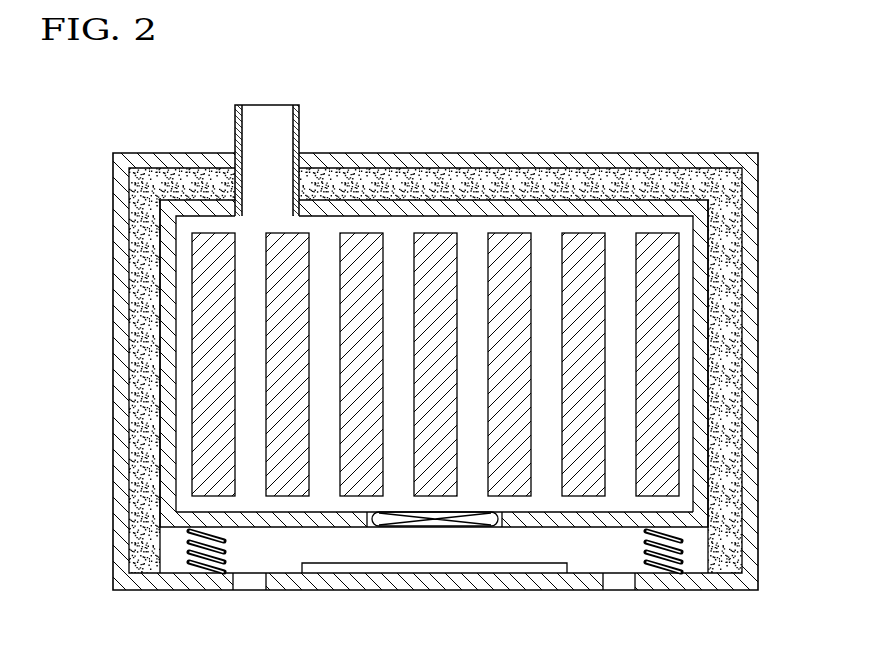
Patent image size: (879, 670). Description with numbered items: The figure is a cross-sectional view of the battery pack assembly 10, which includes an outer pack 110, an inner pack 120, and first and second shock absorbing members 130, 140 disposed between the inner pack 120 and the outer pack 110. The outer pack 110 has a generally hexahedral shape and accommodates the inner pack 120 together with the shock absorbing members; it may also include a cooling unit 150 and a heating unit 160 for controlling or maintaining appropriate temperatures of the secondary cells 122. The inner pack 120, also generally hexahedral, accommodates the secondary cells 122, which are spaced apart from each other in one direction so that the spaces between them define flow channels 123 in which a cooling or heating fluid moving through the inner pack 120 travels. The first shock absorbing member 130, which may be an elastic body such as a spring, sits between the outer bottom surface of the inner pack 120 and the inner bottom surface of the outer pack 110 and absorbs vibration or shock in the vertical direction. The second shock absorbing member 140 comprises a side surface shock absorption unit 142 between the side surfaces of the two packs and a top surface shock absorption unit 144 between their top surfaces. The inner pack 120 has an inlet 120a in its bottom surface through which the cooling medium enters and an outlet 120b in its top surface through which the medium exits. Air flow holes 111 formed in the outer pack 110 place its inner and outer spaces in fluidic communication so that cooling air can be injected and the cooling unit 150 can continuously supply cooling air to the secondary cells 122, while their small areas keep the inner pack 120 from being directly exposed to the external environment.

The battery pack assembly 10 is at (547, 63).
The outer pack 110 is at (752, 169).
The air flow holes 111 is at (265, 580).
The inner pack 120 is at (703, 302).
The inlet 120a is at (372, 527).
The outlet 120b is at (267, 190).
The secondary cells 122 is at (590, 406).
The flow channels 123 is at (620, 433).
The first shock absorbing member 130 is at (202, 567).
The second shock absorbing member 140 is at (431, 318).
The side surface shock absorption unit 142 is at (145, 178).
The top surface shock absorption unit 144 is at (434, 156).
The cooling unit 150 is at (488, 526).
The heating unit 160 is at (430, 568).